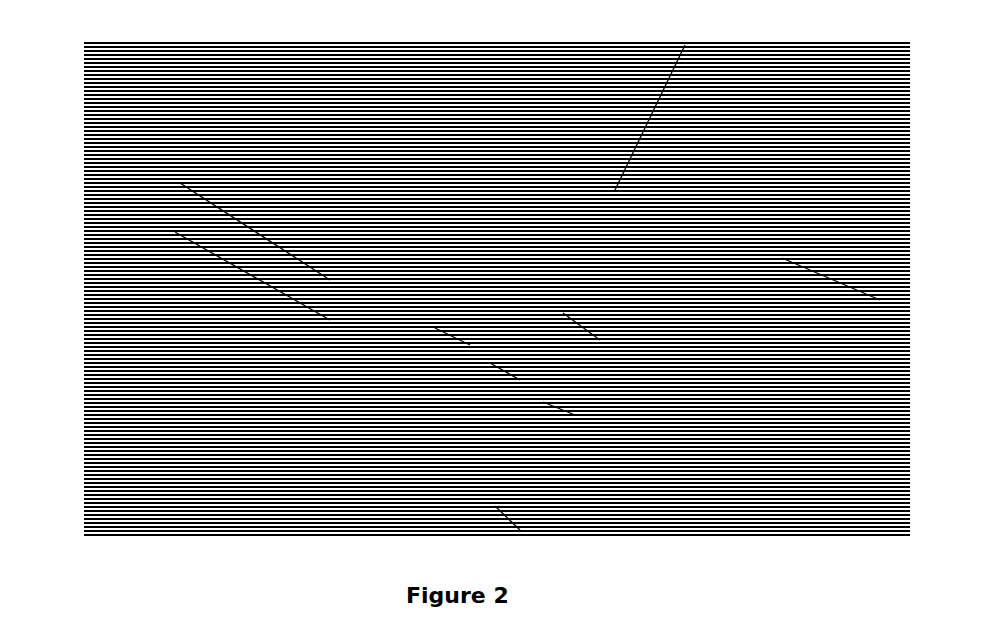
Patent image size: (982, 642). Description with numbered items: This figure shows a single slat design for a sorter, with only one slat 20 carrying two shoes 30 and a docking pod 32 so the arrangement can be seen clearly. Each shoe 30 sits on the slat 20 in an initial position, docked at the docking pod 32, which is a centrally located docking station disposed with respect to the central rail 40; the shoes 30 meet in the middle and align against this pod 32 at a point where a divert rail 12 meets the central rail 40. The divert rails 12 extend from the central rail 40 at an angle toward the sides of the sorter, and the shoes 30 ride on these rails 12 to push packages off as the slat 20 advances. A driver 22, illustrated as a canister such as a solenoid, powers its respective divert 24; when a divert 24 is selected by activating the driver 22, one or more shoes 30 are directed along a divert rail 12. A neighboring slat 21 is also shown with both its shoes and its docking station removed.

The divert rail 12 is at (495, 506).
The slat 20 is at (180, 183).
The slat 21 is at (175, 232).
The driver 22 is at (615, 192).
The divert 24 is at (563, 313).
The shoe 30 is at (435, 328).
The docking pod 32 is at (490, 363).
The central rail 40 is at (782, 258).